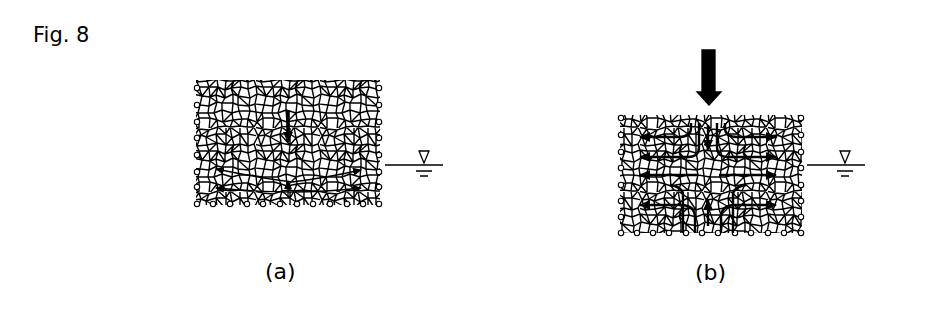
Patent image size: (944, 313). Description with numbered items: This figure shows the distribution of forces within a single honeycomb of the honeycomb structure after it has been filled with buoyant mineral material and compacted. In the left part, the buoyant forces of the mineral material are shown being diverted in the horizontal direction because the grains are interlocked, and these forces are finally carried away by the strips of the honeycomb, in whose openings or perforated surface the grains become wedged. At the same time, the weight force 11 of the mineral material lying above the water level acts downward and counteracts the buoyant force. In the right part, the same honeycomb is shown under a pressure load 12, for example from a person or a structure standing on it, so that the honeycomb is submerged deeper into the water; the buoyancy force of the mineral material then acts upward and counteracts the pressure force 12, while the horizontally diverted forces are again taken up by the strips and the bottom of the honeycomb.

The weight force 11 is at (291, 110).
The pressure load 12 is at (718, 80).